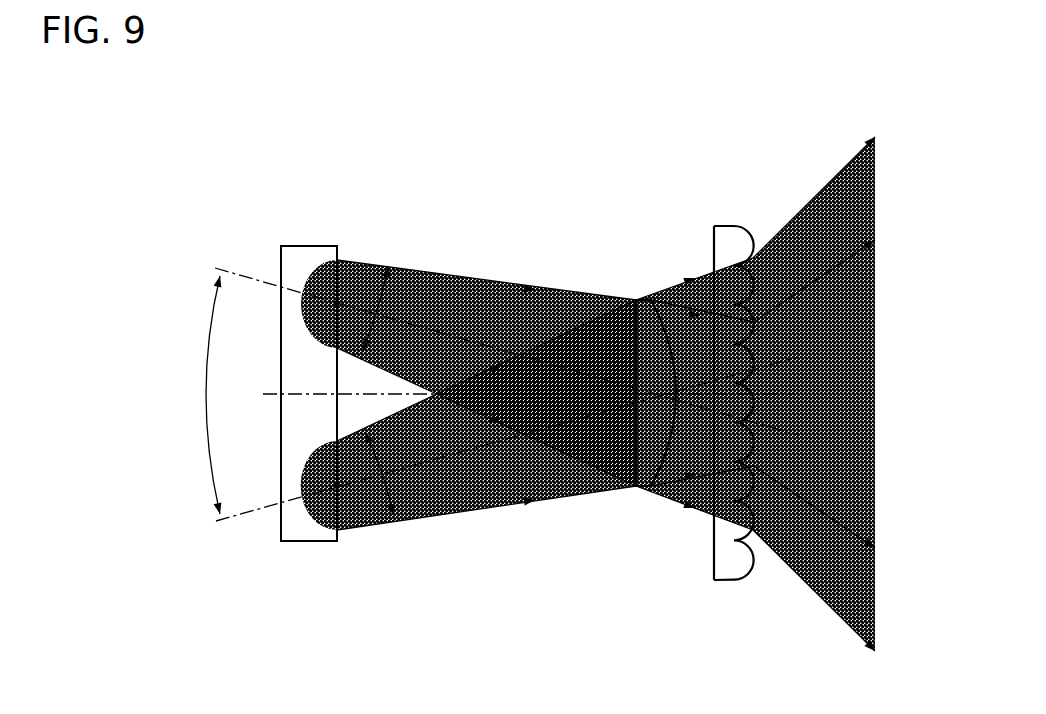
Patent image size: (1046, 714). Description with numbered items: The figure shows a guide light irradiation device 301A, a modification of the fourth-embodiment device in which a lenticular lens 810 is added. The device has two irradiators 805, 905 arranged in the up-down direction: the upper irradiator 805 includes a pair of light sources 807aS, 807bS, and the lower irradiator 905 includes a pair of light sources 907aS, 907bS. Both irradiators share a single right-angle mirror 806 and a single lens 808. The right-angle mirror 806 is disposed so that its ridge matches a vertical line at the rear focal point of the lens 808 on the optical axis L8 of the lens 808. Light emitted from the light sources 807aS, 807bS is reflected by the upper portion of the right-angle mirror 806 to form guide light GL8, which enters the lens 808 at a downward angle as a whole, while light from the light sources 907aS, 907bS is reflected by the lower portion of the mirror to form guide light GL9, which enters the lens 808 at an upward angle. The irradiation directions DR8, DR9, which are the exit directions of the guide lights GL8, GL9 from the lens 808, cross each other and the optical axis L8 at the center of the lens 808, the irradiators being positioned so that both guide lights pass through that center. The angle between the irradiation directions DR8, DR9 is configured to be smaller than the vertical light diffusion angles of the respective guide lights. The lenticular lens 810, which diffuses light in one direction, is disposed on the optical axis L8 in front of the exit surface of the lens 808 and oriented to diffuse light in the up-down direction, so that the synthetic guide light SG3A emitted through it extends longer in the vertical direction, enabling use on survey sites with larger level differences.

The guide light irradiation device 301A is at (137, 121).
The irradiator 805 is at (434, 326).
The irradiator 905 is at (429, 469).
The irradiation direction DR8 is at (260, 275).
The irradiation direction DR9 is at (501, 469).
The right-angle mirror 806 is at (287, 535).
The light source 807bS is at (394, 231).
The light source 807aS is at (329, 295).
The light source 907bS is at (416, 560).
The light source 907aS is at (329, 478).
The guide light GL8 is at (470, 267).
The guide light GL9 is at (500, 500).
The optical axis L8 is at (509, 401).
The lens 808 is at (637, 243).
The lenticular lens 810 is at (723, 217).
The synthetic guide light SG3A is at (817, 173).